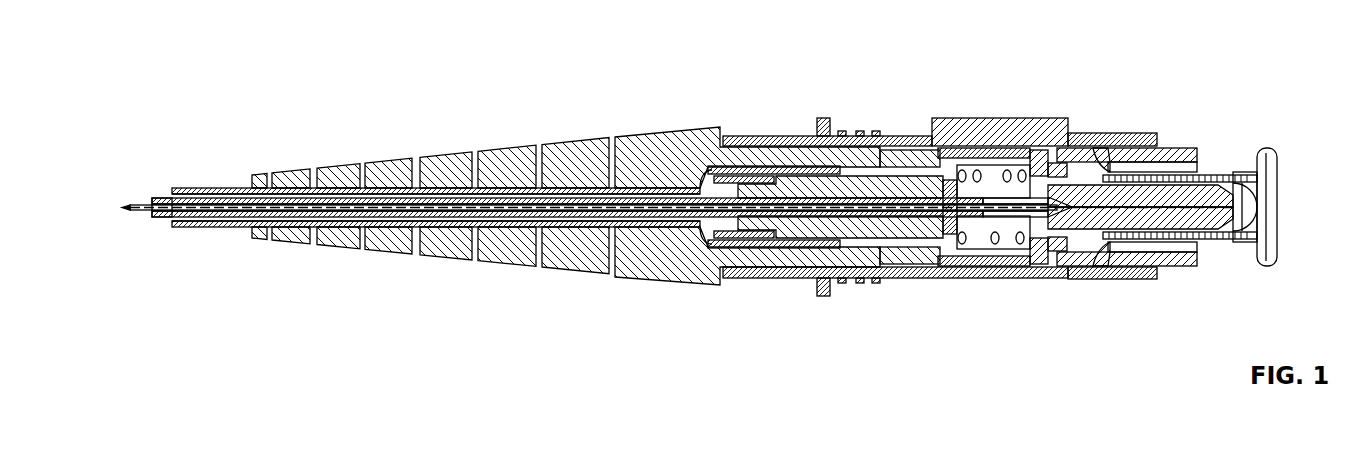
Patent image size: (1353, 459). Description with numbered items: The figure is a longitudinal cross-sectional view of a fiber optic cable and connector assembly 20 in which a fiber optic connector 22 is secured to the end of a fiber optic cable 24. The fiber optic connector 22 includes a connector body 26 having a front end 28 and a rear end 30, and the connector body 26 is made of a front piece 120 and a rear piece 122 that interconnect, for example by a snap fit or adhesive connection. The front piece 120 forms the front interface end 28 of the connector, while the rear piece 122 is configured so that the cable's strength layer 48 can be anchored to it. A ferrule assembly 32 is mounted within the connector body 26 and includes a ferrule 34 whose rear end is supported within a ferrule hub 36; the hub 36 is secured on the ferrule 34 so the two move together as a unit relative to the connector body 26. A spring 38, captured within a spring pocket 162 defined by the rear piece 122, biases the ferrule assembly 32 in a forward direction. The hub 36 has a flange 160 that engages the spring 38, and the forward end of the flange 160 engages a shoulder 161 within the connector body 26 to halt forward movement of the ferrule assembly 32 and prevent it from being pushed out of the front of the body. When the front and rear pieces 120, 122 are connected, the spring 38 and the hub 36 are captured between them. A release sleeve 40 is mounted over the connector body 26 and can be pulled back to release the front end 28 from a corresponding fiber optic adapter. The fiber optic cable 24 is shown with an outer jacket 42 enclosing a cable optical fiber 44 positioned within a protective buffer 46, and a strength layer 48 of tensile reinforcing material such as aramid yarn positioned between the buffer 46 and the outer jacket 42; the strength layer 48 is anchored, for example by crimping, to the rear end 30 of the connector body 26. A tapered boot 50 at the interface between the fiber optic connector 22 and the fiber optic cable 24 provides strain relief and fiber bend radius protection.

The fiber optic cable and connector assembly 20 is at (174, 66).
The fiber optic connector 22 is at (942, 110).
The fiber optic cable 24 is at (216, 236).
The connector body 26 is at (1082, 148).
The front end 28 is at (1197, 153).
The rear end 30 is at (707, 240).
The ferrule assembly 32 is at (1030, 256).
The ferrule 34 is at (1140, 240).
The ferrule hub 36 is at (1053, 163).
The spring 38 is at (948, 245).
The release sleeve 40 is at (973, 148).
The outer jacket 42 is at (197, 187).
The cable optical fiber 44 is at (138, 211).
The protective buffer 46 is at (160, 198).
The strength layer 48 is at (707, 172).
The tapered boot 50 is at (507, 147).
The front piece 120 is at (1177, 265).
The rear piece 122 is at (898, 150).
The flange 160 is at (1033, 163).
The shoulder 161 is at (1108, 162).
The spring pocket 162 is at (982, 237).